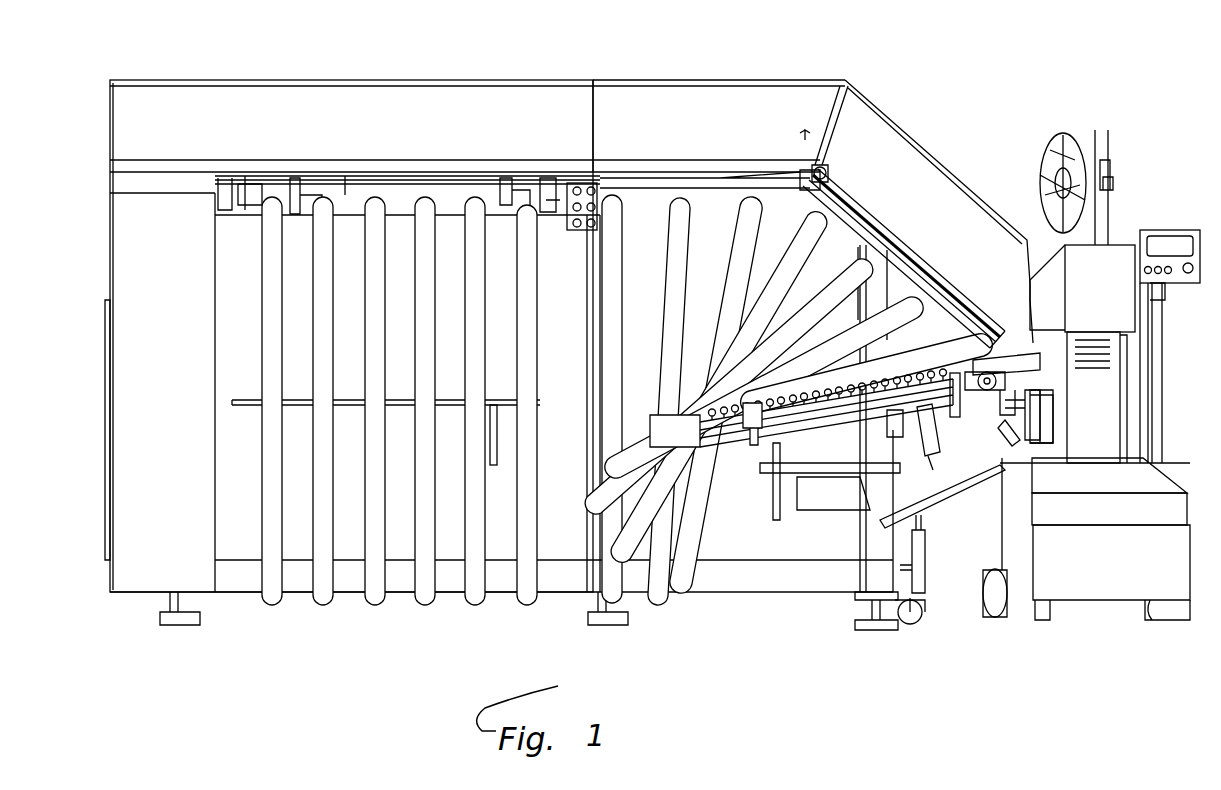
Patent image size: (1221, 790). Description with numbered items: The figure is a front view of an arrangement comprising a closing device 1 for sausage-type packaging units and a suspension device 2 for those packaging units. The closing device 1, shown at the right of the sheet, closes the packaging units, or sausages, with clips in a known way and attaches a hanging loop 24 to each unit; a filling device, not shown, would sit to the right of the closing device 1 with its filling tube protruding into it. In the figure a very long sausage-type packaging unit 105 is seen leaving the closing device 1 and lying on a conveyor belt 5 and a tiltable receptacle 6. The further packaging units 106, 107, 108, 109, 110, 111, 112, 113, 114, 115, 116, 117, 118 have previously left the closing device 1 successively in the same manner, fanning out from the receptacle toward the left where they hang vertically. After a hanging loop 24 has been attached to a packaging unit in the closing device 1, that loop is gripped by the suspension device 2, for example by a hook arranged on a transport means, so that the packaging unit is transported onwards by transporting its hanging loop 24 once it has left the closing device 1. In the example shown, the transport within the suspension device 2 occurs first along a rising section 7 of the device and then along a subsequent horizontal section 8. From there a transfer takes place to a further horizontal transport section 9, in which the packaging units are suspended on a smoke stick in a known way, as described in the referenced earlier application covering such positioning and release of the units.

The closing device 1 is at (1124, 214).
The suspension device 2 is at (503, 66).
The conveyor belt 5 is at (970, 394).
The tiltable receptacle 6 is at (827, 420).
The rising section 7 is at (836, 215).
The horizontal section 8 is at (660, 190).
The further horizontal transport section 9 is at (400, 182).
The hanging loop 24 is at (877, 233).
The sausage-type packaging unit 105 is at (755, 445).
The packaging unit 106 is at (960, 338).
The packaging unit 107 is at (900, 313).
The packaging unit 108 is at (843, 287).
The packaging unit 109 is at (797, 262).
The packaging unit 110 is at (735, 252).
The packaging unit 111 is at (675, 236).
The packaging unit 112 is at (610, 283).
The packaging unit 113 is at (525, 285).
The packaging unit 114 is at (476, 608).
The packaging unit 115 is at (425, 608).
The packaging unit 116 is at (376, 608).
The packaging unit 117 is at (326, 608).
The packaging unit 118 is at (275, 608).